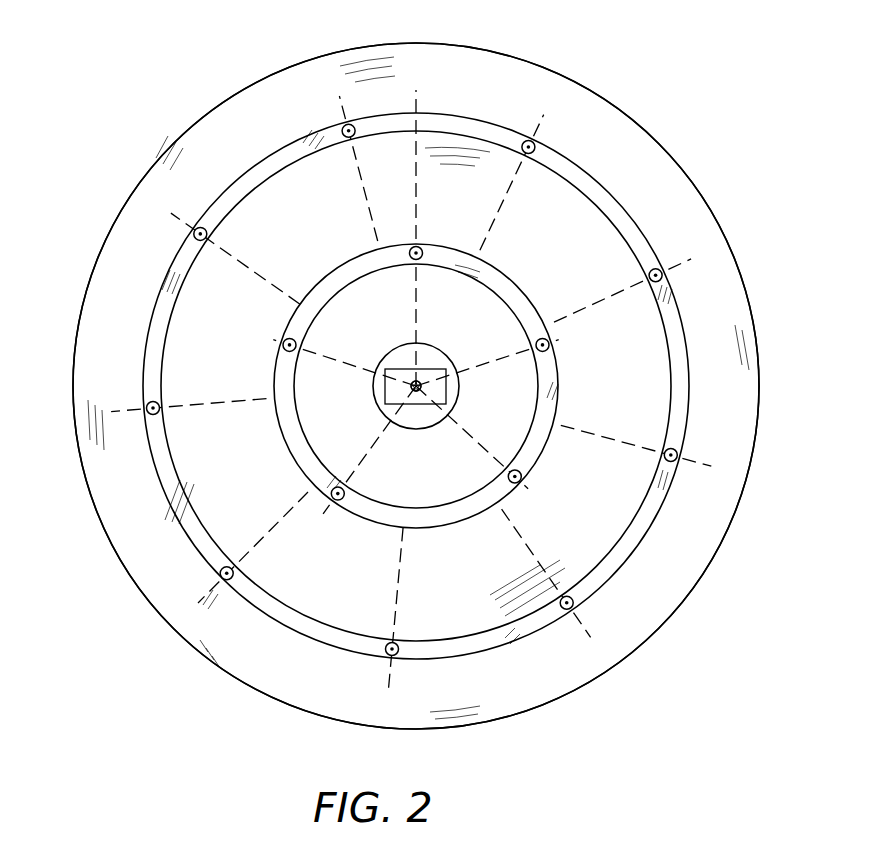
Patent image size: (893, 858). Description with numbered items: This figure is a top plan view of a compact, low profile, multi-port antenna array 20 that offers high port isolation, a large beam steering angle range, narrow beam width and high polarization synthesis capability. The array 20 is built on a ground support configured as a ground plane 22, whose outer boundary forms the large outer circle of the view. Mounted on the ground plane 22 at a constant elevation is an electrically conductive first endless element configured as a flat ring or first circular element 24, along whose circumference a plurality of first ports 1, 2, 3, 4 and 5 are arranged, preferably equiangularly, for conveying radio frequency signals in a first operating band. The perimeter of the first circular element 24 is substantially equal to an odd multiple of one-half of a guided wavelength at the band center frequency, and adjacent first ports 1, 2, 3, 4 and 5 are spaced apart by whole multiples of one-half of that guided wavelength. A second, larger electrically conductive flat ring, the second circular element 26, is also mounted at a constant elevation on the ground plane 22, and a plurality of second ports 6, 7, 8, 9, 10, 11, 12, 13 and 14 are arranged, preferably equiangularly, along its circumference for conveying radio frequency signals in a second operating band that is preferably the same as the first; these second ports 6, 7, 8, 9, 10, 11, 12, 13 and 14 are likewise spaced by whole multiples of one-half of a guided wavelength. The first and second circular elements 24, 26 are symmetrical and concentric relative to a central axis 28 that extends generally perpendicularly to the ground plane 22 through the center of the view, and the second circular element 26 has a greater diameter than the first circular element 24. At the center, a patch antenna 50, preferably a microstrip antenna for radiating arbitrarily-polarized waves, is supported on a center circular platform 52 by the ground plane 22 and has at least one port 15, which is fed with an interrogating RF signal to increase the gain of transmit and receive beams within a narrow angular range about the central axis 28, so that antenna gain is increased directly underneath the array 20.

The antenna array 20 is at (84, 72).
The ground plane 22 is at (88, 338).
The first circular element 24 is at (365, 247).
The second circular element 26 is at (458, 117).
The central axis 28 is at (418, 390).
The patch antenna 50 is at (428, 376).
The center circular platform 52 is at (421, 412).
The port 15 is at (415, 381).
The first port 1 is at (345, 493).
The first port 2 is at (512, 470).
The first port 3 is at (541, 352).
The first port 4 is at (422, 257).
The first port 5 is at (294, 351).
The second port 6 is at (398, 645).
The second port 7 is at (567, 596).
The second port 8 is at (666, 450).
The second port 9 is at (649, 275).
The second port 10 is at (531, 154).
The second port 11 is at (342, 135).
The second port 12 is at (207, 234).
The second port 13 is at (158, 403).
The second port 14 is at (236, 571).